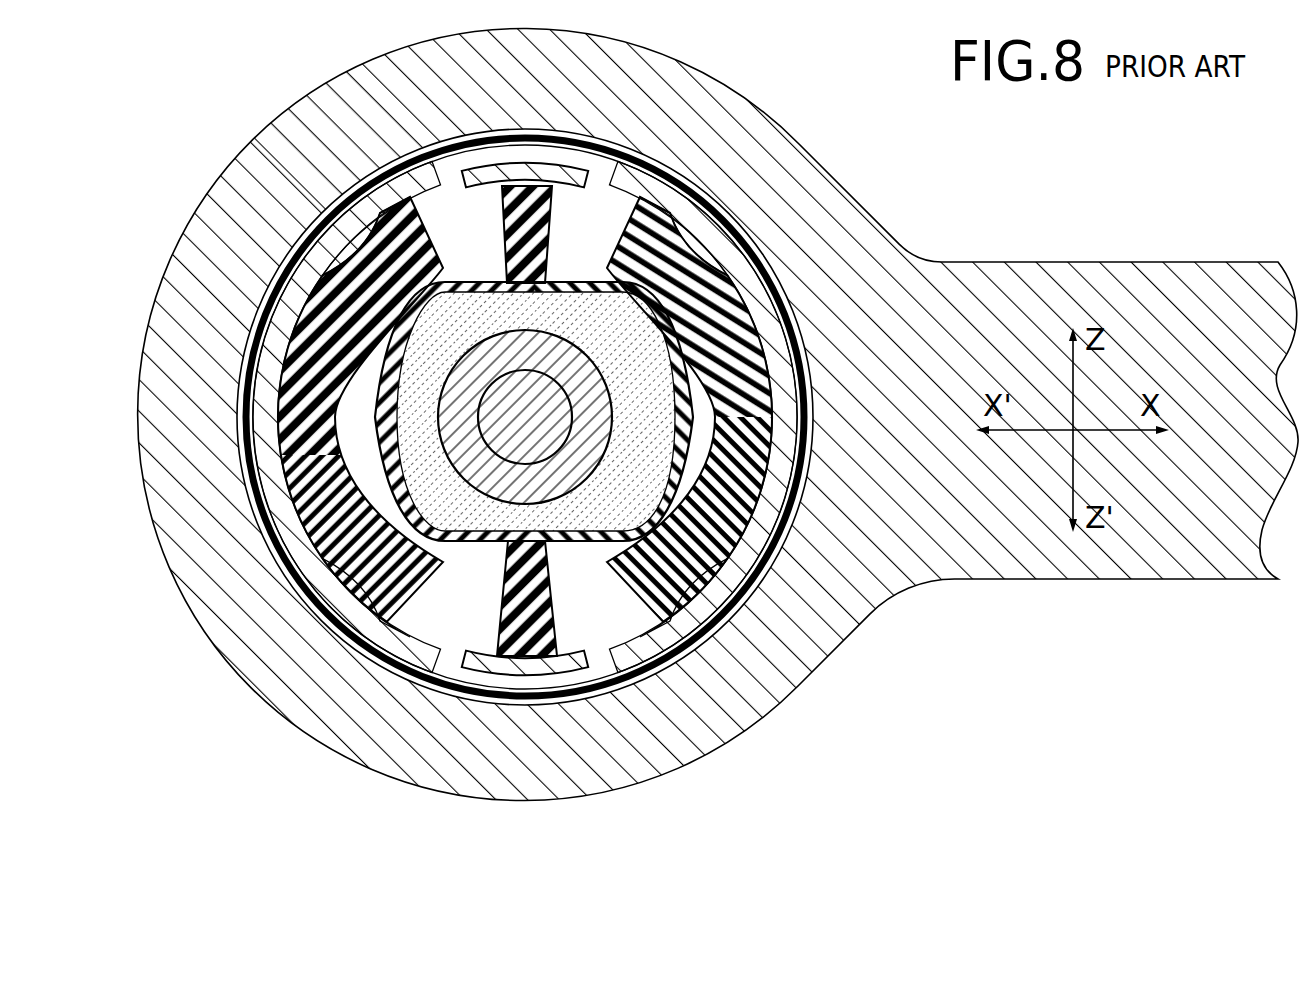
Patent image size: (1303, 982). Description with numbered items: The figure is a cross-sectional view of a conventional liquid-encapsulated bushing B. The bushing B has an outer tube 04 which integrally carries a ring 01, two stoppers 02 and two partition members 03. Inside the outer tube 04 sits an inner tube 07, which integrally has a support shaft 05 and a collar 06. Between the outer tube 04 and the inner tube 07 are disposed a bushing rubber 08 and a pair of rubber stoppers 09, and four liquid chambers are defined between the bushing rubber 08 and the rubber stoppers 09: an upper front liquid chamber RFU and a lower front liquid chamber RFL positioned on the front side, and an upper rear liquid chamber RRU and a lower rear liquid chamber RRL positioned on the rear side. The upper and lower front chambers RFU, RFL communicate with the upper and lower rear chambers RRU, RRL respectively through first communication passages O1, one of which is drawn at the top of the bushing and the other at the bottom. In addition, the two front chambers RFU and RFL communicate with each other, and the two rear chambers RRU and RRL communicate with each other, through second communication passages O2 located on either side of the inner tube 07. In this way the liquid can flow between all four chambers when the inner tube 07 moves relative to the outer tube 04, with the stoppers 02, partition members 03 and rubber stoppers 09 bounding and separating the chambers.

The ring 01 is at (621, 696).
The stopper 02 is at (788, 432).
The partition member 03 is at (487, 166).
The outer tube 04 is at (650, 150).
The support shaft 05 is at (552, 357).
The collar 06 is at (483, 300).
The inner tube 07 is at (458, 546).
The bushing rubber 08 is at (553, 180).
The rubber stopper 09 is at (758, 400).
The liquid-encapsulated bushing B is at (750, 165).
The first communication passage O1 is at (556, 142).
The second communication passage O2 is at (378, 407).
The upper front liquid chamber RFU is at (497, 238).
The upper rear liquid chamber RRU is at (618, 245).
The lower front liquid chamber RFL is at (494, 639).
The lower rear liquid chamber RRL is at (620, 609).